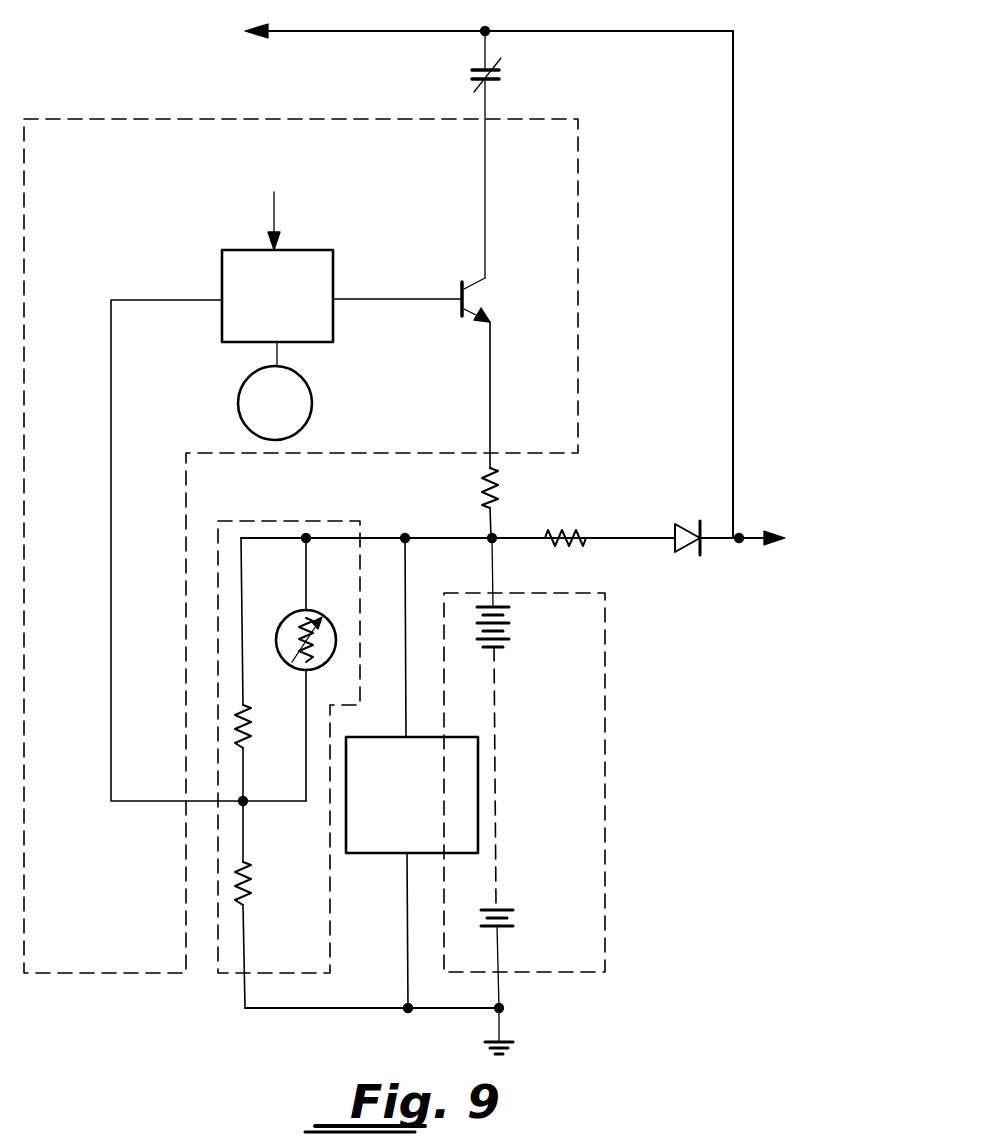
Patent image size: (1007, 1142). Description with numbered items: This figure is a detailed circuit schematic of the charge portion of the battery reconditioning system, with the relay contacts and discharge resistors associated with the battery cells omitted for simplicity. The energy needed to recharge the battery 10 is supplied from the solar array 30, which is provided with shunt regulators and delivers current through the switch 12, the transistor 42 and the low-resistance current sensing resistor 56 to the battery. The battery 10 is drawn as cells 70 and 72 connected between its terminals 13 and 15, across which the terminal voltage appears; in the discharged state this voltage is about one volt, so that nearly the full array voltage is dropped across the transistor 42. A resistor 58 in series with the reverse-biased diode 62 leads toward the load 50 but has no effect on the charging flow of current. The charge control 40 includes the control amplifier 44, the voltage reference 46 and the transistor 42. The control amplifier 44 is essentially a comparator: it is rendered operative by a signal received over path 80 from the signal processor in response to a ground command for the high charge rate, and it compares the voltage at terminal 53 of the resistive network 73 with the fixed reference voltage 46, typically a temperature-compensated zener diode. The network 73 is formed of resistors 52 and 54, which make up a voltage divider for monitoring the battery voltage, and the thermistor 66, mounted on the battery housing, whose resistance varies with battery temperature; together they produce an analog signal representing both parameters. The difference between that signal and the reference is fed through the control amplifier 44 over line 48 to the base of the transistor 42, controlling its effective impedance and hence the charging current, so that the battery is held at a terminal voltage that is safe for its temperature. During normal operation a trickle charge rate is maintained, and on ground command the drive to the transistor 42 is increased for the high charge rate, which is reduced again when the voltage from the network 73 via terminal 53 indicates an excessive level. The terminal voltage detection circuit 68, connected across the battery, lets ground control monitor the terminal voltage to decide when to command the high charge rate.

The battery 10 is at (585, 822).
The switch 12 is at (504, 74).
The battery terminal 13 is at (504, 1008).
The battery terminal 15 is at (489, 537).
The solar array 30 is at (401, 35).
The charge control 40 is at (120, 956).
The transistor 42 is at (476, 300).
The control amplifier 44 is at (300, 250).
The voltage reference 46 is at (312, 403).
The feedback line 48 is at (110, 580).
The load 50 is at (818, 543).
The resistor 52 is at (255, 732).
The terminal 53 is at (246, 800).
The resistor 54 is at (258, 884).
The current sensing resistor 56 is at (497, 496).
The resistor 58 is at (568, 536).
The diode 62 is at (675, 522).
The thermistor 66 is at (318, 610).
The terminal voltage detection circuit 68 is at (376, 856).
The battery cell 70 is at (512, 630).
The battery cell 72 is at (514, 918).
The resistive network 73 is at (308, 950).
The signal path 80 is at (274, 212).